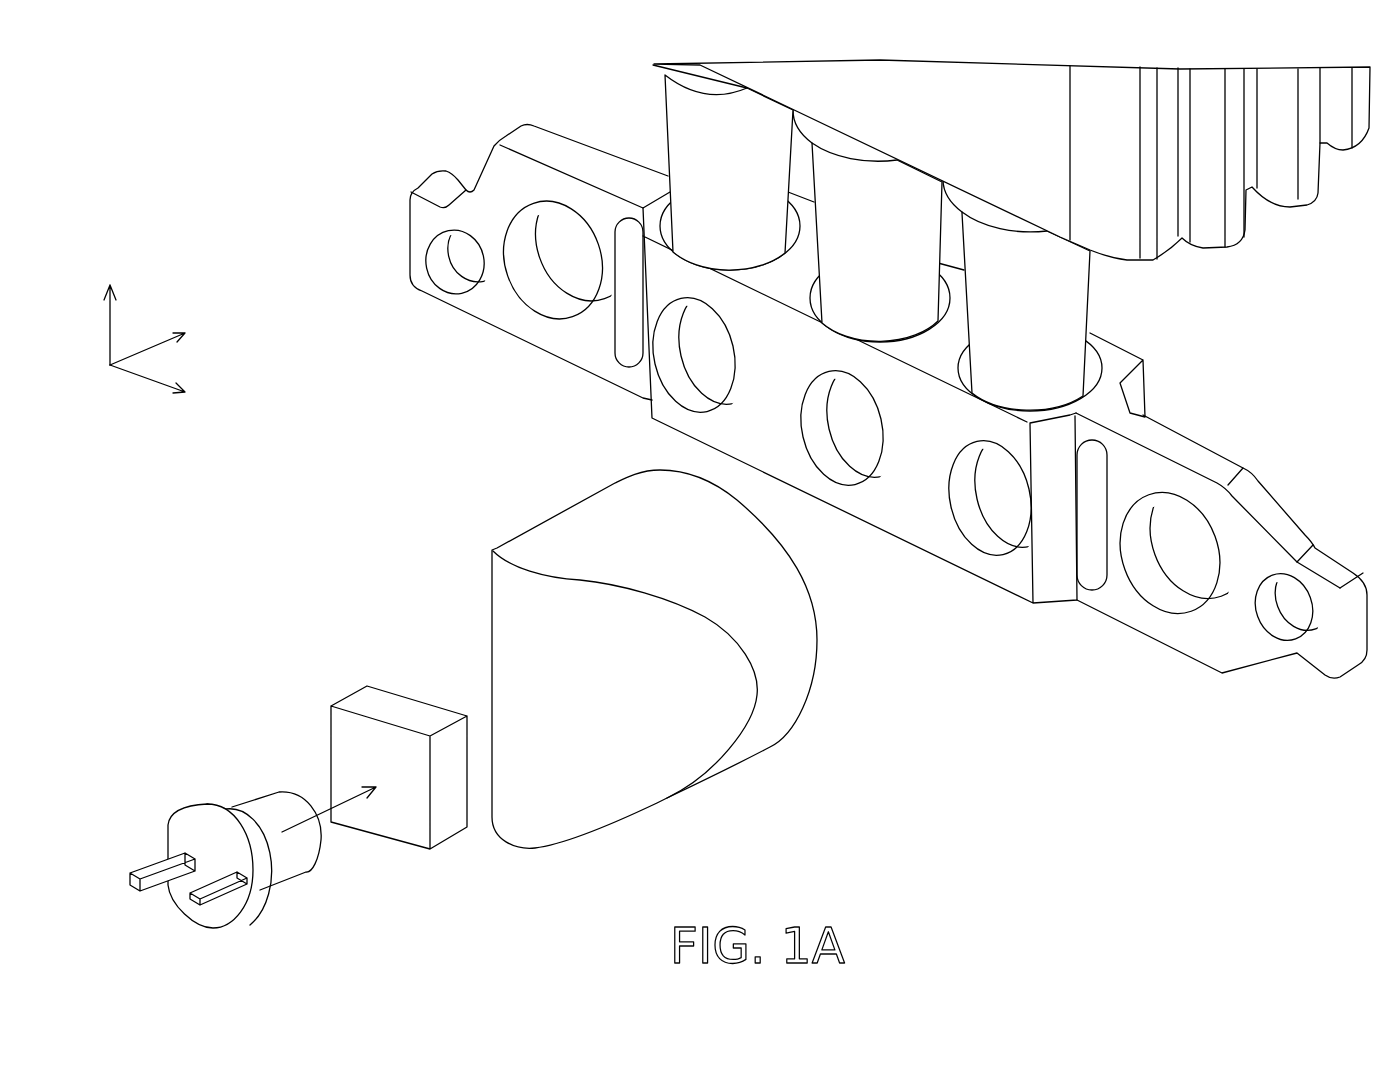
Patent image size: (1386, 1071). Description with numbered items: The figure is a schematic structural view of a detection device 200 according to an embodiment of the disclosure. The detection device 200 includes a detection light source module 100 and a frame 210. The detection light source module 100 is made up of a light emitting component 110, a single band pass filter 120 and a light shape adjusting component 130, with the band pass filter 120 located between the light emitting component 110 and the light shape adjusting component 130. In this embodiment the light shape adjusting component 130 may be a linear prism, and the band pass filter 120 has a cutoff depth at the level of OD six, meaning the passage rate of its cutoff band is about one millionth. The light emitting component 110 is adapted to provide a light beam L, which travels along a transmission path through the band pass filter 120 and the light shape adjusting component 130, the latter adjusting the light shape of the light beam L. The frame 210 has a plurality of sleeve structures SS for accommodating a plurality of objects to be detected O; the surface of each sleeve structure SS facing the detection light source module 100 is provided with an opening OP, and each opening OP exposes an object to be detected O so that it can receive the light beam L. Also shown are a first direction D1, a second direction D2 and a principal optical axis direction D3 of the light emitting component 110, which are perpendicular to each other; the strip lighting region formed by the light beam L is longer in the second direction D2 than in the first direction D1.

The detection light source module 100 is at (297, 484).
The light emitting component 110 is at (205, 803).
The band pass filter 120 is at (358, 703).
The light shape adjusting component 130 is at (562, 538).
The detection device 200 is at (1312, 903).
The frame 210 is at (1163, 630).
The object to be detected O is at (1072, 310).
The sleeve structure SS is at (941, 291).
The opening OP is at (857, 462).
The light beam L is at (329, 820).
The first direction D1 is at (111, 309).
The second direction D2 is at (166, 390).
The principal optical axis direction D3 is at (164, 337).